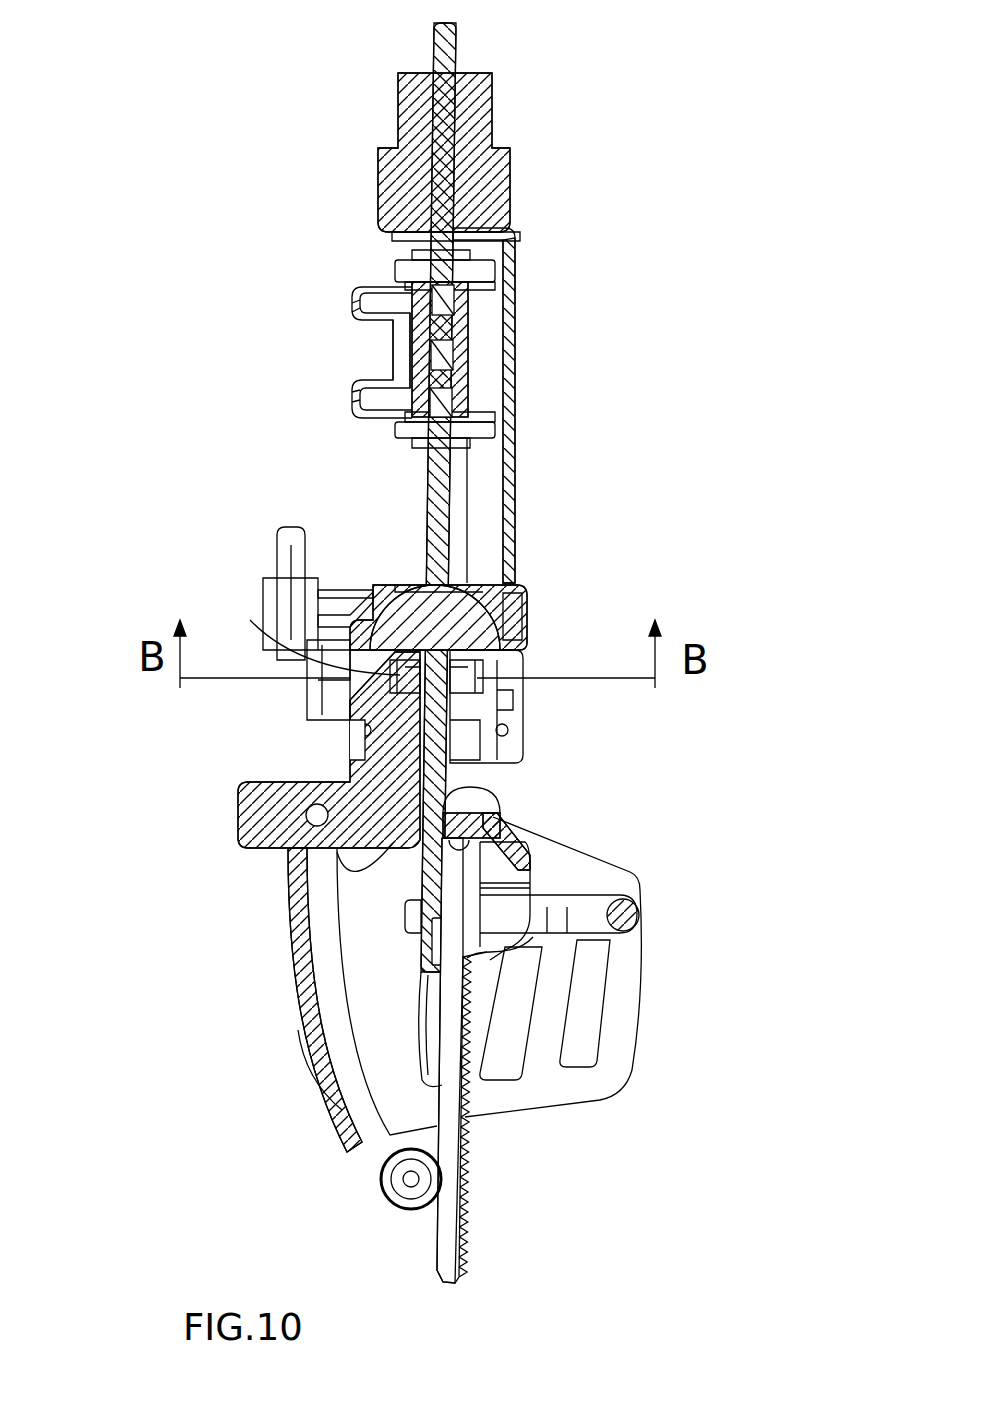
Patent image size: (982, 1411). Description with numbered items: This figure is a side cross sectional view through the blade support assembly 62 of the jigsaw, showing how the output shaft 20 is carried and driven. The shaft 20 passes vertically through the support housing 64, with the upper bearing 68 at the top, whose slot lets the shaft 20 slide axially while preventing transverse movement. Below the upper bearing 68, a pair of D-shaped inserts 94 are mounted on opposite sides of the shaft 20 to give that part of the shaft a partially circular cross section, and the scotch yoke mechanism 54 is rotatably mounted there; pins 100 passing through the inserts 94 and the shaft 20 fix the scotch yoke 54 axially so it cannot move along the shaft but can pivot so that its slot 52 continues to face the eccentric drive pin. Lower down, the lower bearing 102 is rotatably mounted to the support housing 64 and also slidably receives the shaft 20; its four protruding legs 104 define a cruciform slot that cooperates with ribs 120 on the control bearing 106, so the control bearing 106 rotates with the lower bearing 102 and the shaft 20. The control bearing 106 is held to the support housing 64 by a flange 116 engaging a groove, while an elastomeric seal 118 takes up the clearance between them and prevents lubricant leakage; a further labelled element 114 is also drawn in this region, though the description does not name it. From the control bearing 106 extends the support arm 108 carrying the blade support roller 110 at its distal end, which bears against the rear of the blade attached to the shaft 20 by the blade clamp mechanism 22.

The output shaft 20 is at (447, 43).
The blade clamp mechanism 22 is at (575, 922).
The slot 52 is at (380, 345).
The scotch yoke mechanism 54 is at (365, 290).
The blade support assembly 62 is at (173, 322).
The support housing 64 is at (515, 487).
The upper bearing 68 is at (508, 95).
The D-shaped inserts 94 is at (420, 380).
The pins 100 is at (405, 430).
The lower bearing 102 is at (478, 592).
The legs 104 is at (487, 663).
The control bearing 106 is at (390, 775).
The support arm 108 is at (315, 943).
The blade support roller 110 is at (393, 1183).
The screw 114 is at (360, 708).
The flange 116 is at (517, 697).
The elastomeric seal 118 is at (513, 734).
The ribs 120 is at (333, 650).